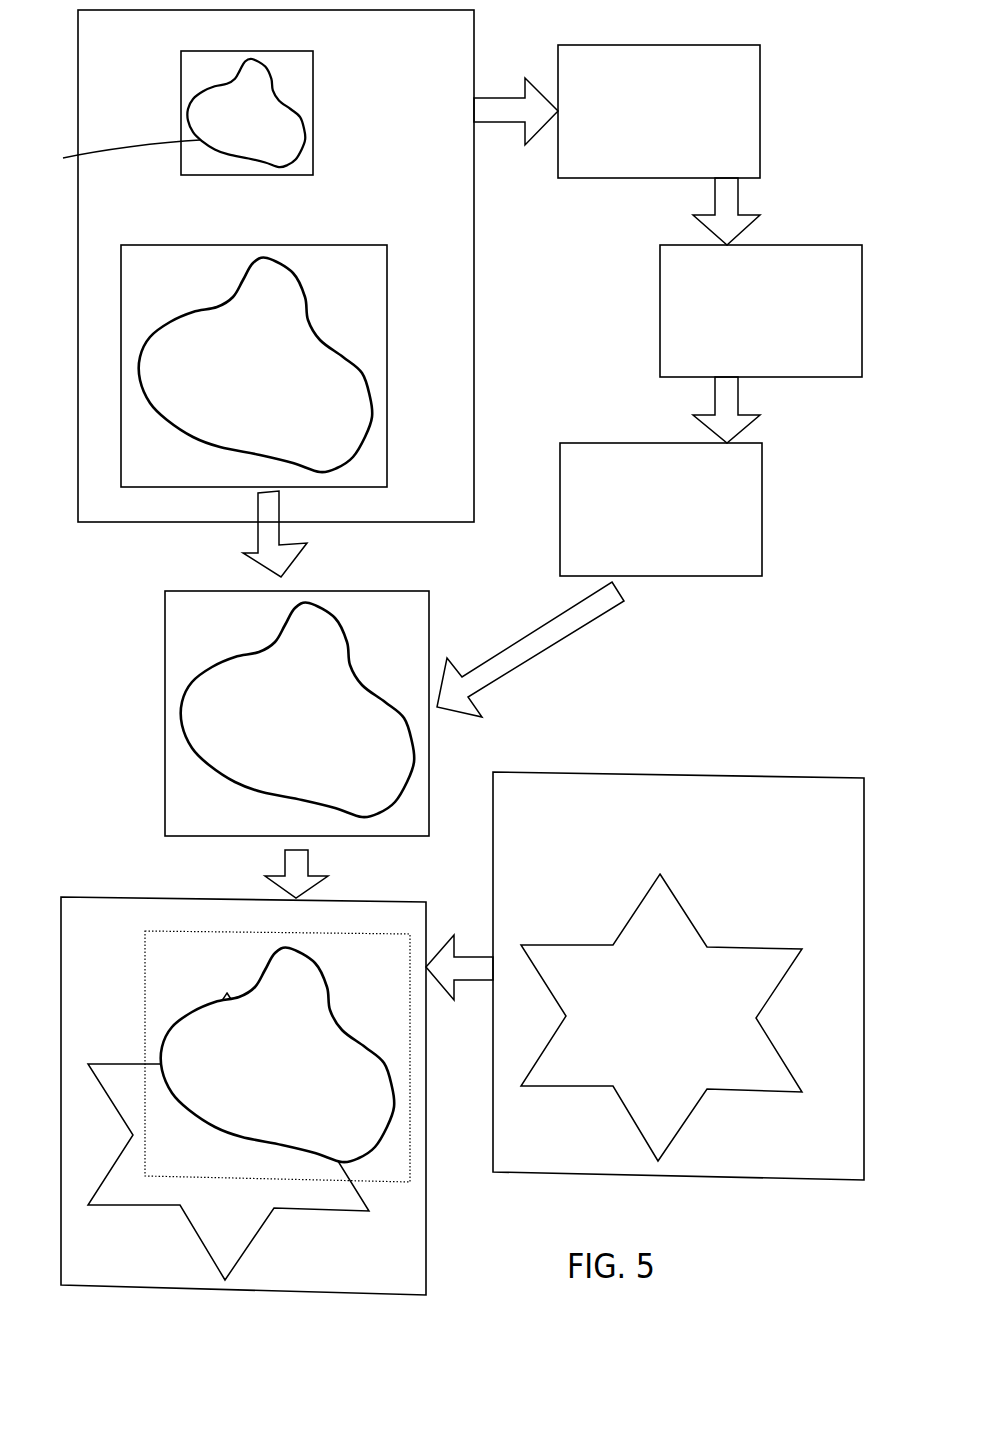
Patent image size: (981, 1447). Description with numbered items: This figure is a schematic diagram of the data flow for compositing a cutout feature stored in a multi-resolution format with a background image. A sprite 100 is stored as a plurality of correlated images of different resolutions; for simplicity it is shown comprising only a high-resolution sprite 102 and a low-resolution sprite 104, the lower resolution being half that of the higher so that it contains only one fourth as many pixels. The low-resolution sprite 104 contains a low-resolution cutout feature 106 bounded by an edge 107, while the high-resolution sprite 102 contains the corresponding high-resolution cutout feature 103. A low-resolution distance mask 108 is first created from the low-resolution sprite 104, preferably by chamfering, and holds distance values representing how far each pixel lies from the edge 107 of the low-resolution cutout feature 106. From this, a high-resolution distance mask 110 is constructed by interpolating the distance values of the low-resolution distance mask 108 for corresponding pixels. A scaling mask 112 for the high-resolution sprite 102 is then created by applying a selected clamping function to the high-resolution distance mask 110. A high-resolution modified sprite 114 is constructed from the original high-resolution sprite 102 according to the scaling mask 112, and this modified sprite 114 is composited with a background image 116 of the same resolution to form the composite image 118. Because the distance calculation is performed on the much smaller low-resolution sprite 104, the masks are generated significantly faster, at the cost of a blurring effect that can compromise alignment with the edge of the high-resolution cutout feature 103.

The sprite 100 is at (165, 521).
The high-resolution sprite 102 is at (121, 318).
The high-resolution cutout feature 103 is at (182, 389).
The low-resolution sprite 104 is at (180, 77).
The low-resolution cutout feature 106 is at (215, 100).
The edge 107 is at (114, 153).
The low-resolution distance mask 108 is at (760, 138).
The high-resolution distance mask 110 is at (793, 245).
The scaling mask 112 is at (762, 497).
The high-resolution modified sprite 114 is at (164, 651).
The background image 116 is at (711, 773).
The composite image 118 is at (148, 897).